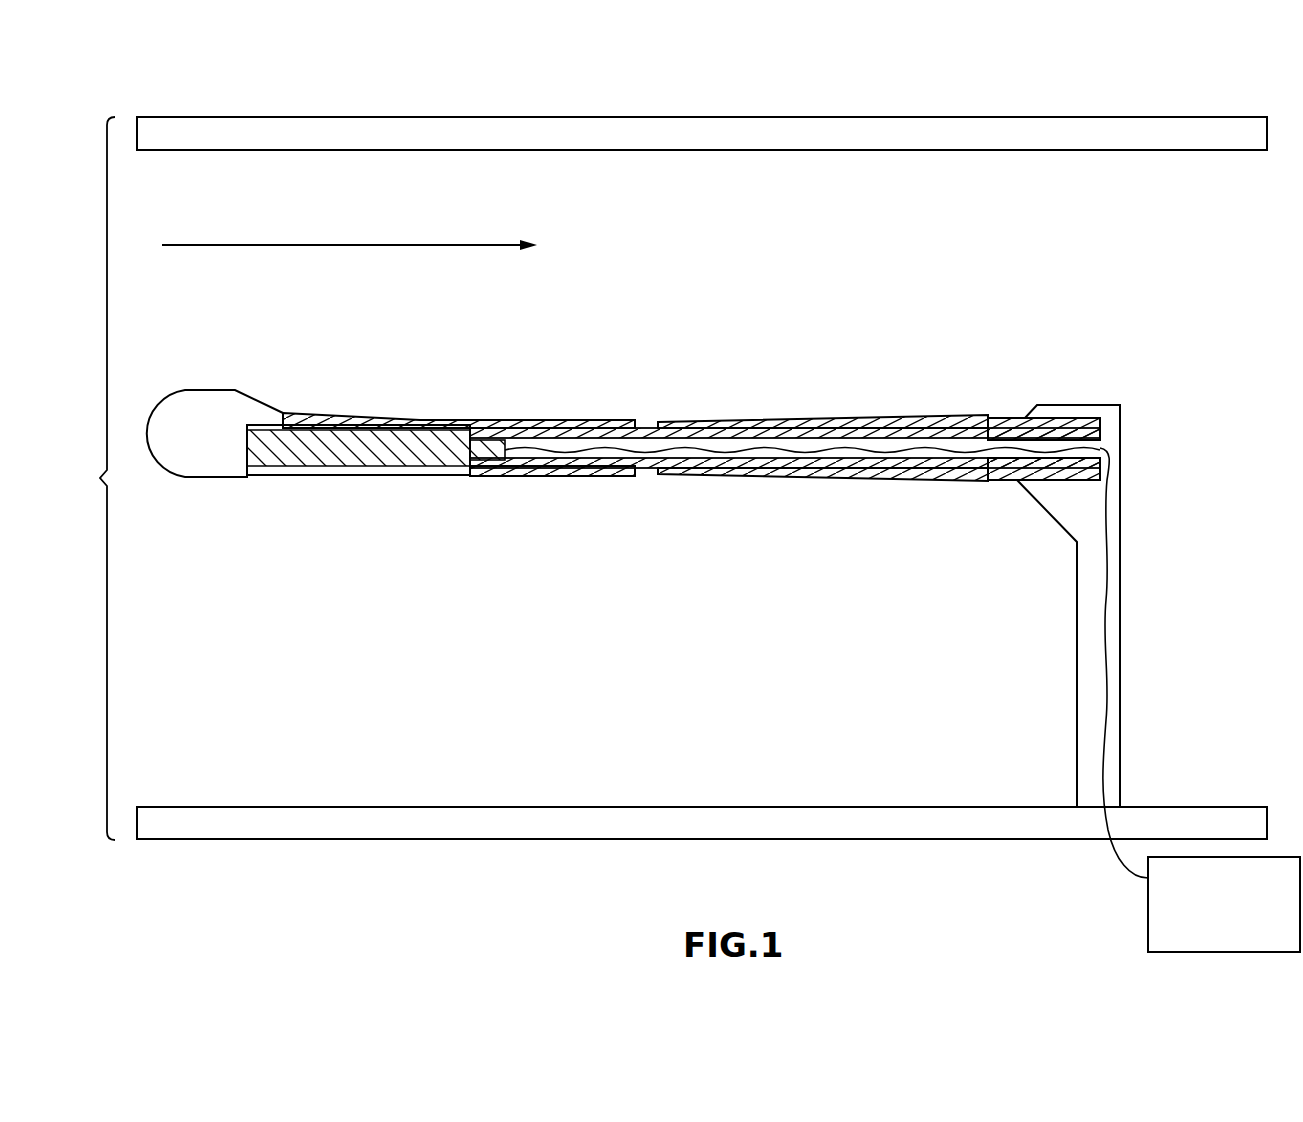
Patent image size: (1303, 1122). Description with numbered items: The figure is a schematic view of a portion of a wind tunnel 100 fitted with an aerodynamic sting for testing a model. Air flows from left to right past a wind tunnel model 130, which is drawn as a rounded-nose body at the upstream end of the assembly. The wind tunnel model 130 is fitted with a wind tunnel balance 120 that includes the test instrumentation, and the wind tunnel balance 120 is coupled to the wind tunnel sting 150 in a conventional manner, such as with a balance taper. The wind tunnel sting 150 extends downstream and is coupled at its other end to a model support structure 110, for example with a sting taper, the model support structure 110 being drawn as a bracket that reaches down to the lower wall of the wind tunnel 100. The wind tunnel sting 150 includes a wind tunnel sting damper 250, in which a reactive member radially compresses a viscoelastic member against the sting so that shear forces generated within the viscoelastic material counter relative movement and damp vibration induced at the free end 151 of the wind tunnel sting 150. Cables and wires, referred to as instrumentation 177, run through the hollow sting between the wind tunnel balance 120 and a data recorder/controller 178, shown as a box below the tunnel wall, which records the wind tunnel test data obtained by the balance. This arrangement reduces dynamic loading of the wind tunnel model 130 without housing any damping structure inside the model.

The wind tunnel 100 is at (1040, 103).
The model support structure 110 is at (1077, 640).
The wind tunnel balance 120 is at (272, 455).
The wind tunnel model 130 is at (192, 390).
The wind tunnel sting 150 is at (977, 405).
The free end 151 is at (468, 485).
The instrumentation 177 is at (637, 448).
The data recorder/controller 178 is at (1148, 903).
The wind tunnel sting damper 250 is at (745, 500).